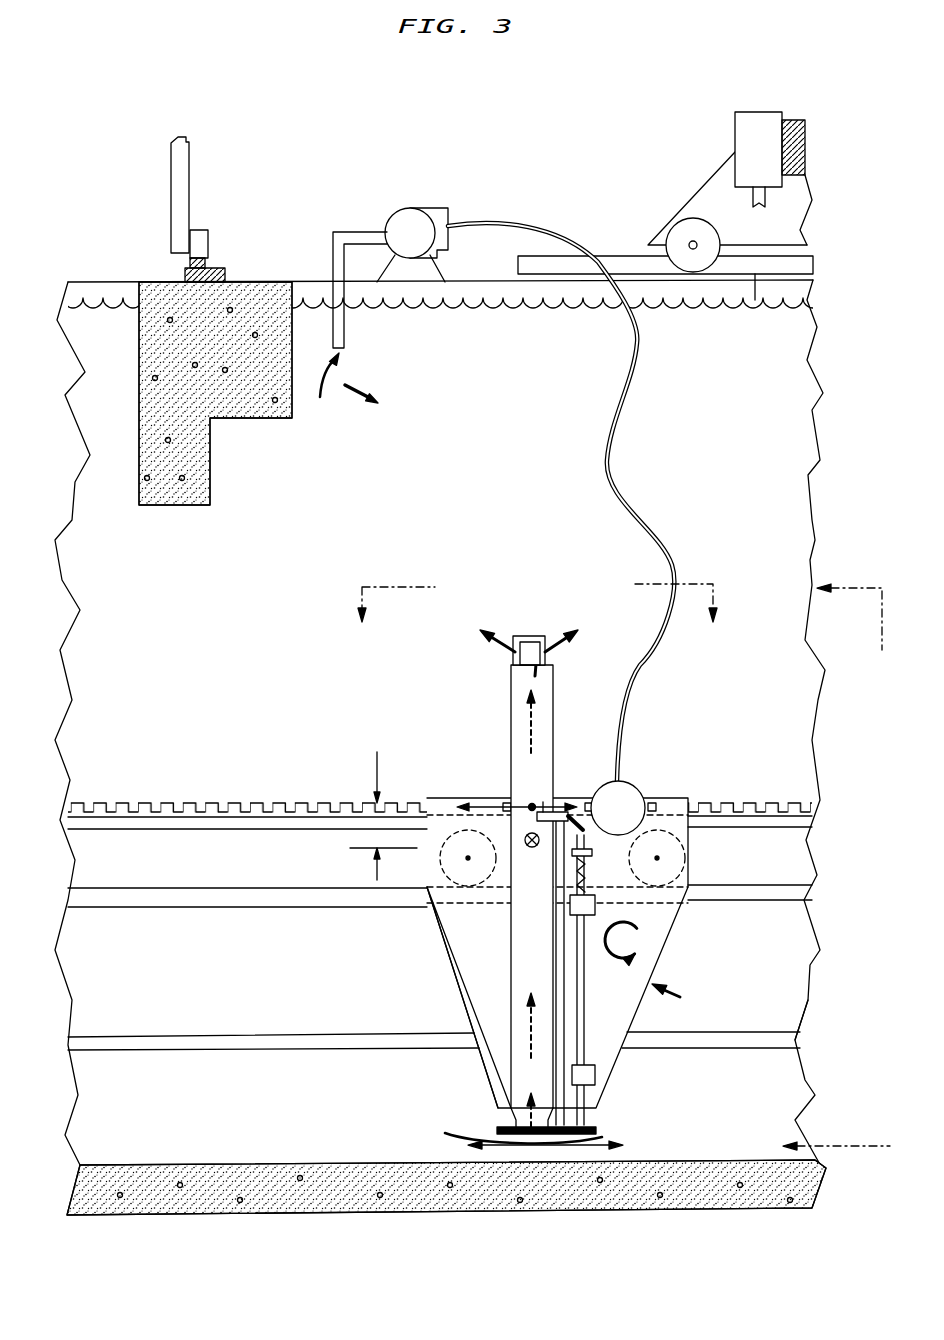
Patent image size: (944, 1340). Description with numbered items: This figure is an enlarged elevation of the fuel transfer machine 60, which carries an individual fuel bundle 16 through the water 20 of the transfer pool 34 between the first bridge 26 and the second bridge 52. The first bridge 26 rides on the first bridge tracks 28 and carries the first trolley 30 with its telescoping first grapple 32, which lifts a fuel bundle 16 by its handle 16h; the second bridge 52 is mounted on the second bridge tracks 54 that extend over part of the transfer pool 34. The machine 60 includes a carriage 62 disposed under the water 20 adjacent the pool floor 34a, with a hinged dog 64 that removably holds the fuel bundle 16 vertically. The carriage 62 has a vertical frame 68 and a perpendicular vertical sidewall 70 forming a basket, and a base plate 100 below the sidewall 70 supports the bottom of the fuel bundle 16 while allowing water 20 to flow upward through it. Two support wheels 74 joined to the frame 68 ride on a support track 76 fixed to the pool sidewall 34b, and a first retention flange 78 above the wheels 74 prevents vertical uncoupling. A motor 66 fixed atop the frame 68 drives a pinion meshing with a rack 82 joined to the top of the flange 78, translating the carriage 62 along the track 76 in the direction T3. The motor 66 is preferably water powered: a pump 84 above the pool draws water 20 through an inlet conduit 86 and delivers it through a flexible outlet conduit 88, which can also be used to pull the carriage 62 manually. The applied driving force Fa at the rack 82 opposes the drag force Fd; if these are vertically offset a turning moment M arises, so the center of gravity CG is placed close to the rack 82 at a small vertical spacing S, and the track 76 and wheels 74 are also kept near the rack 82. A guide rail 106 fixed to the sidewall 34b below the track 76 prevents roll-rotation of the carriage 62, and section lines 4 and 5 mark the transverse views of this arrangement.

The fuel bundle 16 is at (553, 687).
The handle 16h is at (528, 635).
The water 20 is at (756, 273).
The first bridge 26 is at (699, 169).
The first bridge tracks 28 is at (622, 253).
The first trolley 30 is at (733, 127).
The first grapple 32 is at (753, 197).
The transfer pool 34 is at (731, 386).
The pool floor 34a is at (276, 1165).
The pool sidewall 34b is at (795, 995).
The second bridge 52 is at (201, 178).
The second bridge tracks 54 is at (218, 272).
The fuel transfer machine 60 is at (344, 705).
The carriage 62 is at (571, 953).
The dog 64 is at (533, 848).
The motor 66 is at (636, 790).
The vertical frame 68 is at (477, 1005).
The vertical sidewall 70 is at (573, 1030).
The support wheels 74 is at (423, 880).
The support track 76 is at (750, 900).
The first retention flange 78 is at (787, 827).
The rack 82 is at (770, 797).
The water pump 84 is at (414, 205).
The inlet conduit 86 is at (345, 328).
The outlet conduit 88 is at (627, 518).
The base plate 100 is at (598, 1136).
The guide rail 106 is at (737, 1030).
The section line 4- 4 is at (828, 868).
The section line 5- 5 is at (538, 619).
The vertical spacing S is at (375, 770).
The applied driving force Fa is at (500, 801).
The resultant drag force Fd is at (543, 802).
The turning moment M is at (650, 922).
The center of gravity CG is at (510, 887).
The carriage translation direction T3 is at (560, 1150).